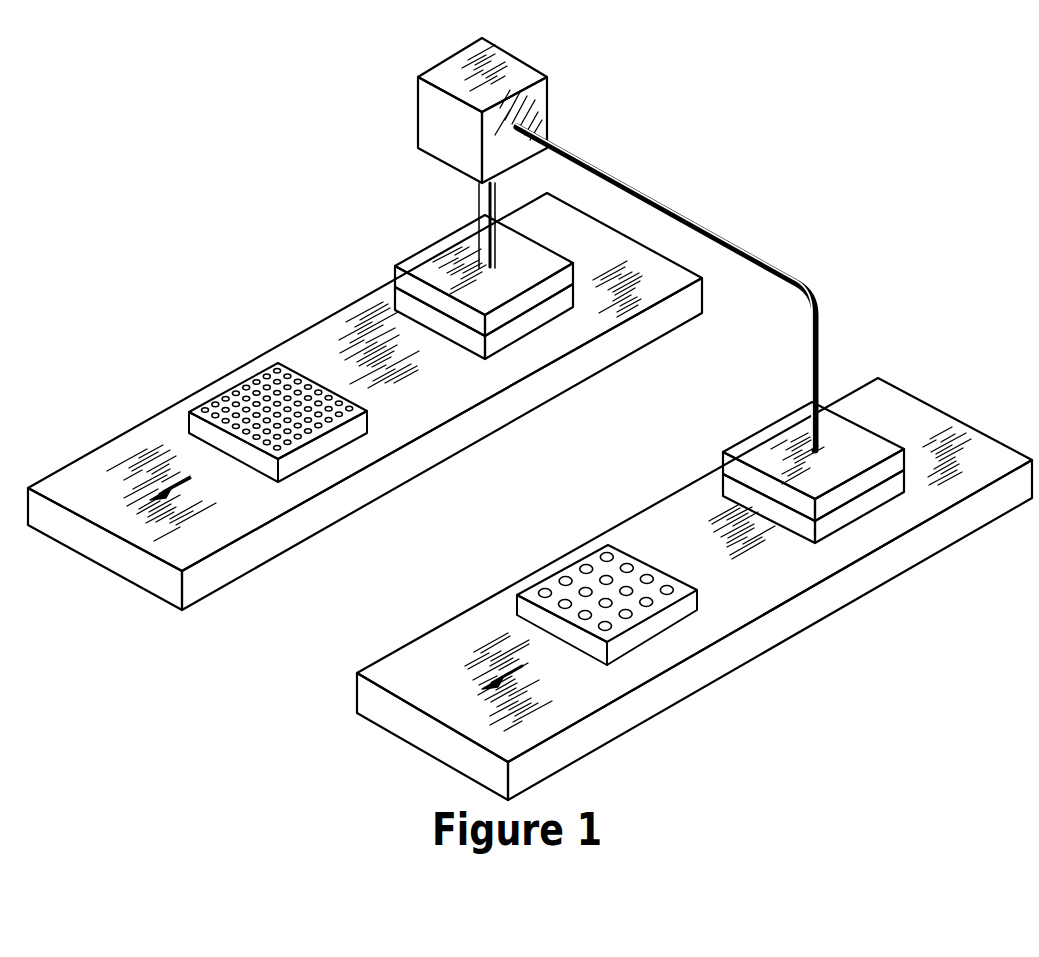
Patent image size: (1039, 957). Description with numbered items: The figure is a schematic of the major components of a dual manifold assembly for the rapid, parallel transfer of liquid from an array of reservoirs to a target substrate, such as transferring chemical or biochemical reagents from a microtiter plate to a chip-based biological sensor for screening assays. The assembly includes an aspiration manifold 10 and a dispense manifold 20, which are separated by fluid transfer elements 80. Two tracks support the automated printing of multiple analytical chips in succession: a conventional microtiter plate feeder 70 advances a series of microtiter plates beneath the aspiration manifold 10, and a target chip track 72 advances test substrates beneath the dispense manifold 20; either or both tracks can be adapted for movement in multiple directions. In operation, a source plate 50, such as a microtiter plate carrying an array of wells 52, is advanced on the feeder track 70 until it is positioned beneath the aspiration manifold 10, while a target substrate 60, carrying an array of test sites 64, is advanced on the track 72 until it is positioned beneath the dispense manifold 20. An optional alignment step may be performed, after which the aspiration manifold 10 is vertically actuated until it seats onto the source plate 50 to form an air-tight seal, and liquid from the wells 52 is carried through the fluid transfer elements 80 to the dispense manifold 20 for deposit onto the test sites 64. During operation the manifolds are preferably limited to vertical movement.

The aspiration manifold 10 is at (777, 453).
The dispense manifold 20 is at (450, 270).
The source plate 50 is at (873, 497).
The wells 52 is at (607, 555).
The target substrate 60 is at (517, 332).
The test sites 64 is at (288, 377).
The microtiter plate feeder 70 is at (442, 623).
The target chip track 72 is at (325, 508).
The fluid transfer elements 80 is at (523, 77).